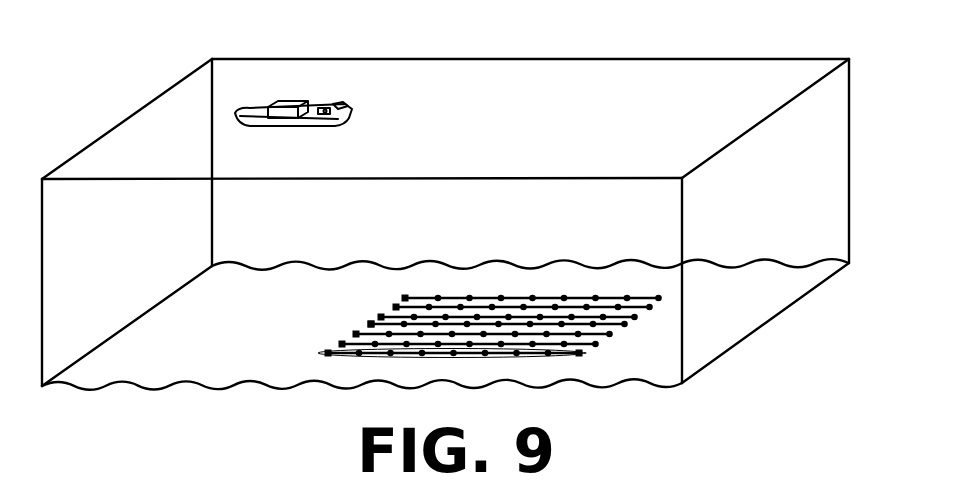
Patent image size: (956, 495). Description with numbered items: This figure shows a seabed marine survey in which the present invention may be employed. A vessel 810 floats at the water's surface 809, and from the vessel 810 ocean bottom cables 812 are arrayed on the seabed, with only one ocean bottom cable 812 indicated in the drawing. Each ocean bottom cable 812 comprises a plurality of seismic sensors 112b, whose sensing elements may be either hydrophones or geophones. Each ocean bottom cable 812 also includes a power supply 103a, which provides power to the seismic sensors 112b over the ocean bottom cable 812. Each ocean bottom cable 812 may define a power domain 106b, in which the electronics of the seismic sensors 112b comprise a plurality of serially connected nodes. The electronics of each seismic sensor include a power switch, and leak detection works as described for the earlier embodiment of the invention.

The water's surface 809 is at (703, 68).
The vessel 810 is at (254, 105).
The seismic sensors 112b is at (435, 296).
The power supply 103a is at (367, 323).
The ocean bottom cable 812 is at (338, 358).
The power domain 106b is at (584, 354).